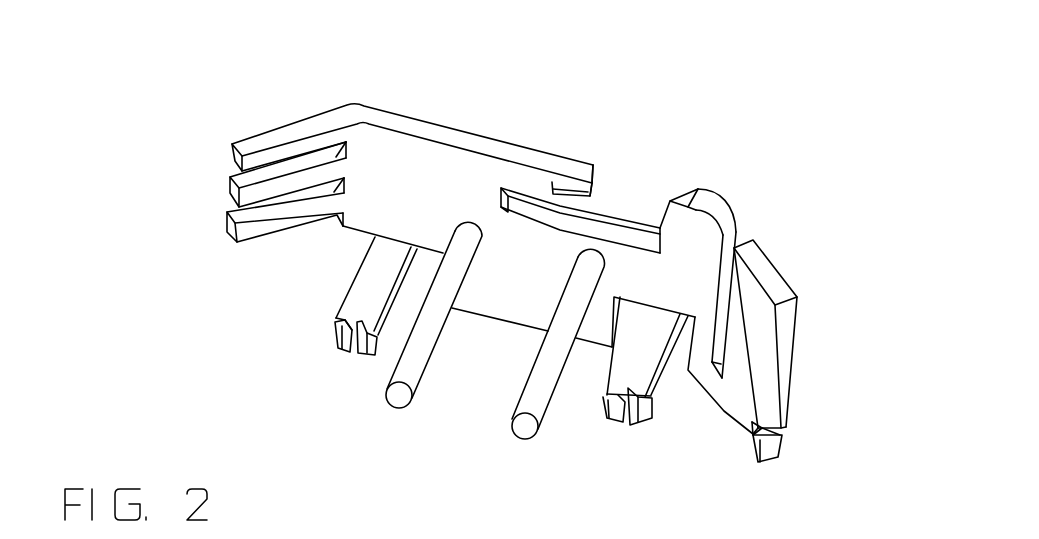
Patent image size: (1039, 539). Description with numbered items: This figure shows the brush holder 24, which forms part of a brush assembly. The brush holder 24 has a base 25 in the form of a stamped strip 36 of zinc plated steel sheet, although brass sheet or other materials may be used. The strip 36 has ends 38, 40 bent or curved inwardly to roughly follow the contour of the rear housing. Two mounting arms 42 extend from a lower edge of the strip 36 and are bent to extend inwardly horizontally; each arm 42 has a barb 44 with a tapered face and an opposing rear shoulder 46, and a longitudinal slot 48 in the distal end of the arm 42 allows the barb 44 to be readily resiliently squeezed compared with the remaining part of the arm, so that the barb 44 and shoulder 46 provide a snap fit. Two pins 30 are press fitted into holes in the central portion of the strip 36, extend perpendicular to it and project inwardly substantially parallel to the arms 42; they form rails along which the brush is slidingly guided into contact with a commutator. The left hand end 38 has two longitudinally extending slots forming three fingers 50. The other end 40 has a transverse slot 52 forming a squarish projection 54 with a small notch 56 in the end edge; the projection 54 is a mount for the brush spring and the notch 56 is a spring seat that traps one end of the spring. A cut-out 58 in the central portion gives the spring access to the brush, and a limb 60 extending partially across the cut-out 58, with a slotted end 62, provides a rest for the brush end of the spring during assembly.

The brush holder 24 is at (192, 92).
The base 25 is at (465, 180).
The pins 30 is at (543, 370).
The strip 36 is at (413, 168).
The end 38 is at (280, 134).
The end 40 is at (745, 340).
The mounting arms 42 is at (383, 275).
The barb 44 is at (338, 333).
The rear shoulder 46 is at (338, 322).
The longitudinal slot 48 is at (352, 350).
The fingers 50 is at (228, 230).
The transverse slot 52 is at (740, 235).
The squarish projection 54 is at (778, 282).
The notch 56 is at (778, 435).
The cut-out 58 is at (645, 210).
The limb 60 is at (573, 167).
The slotted end 62 is at (597, 192).